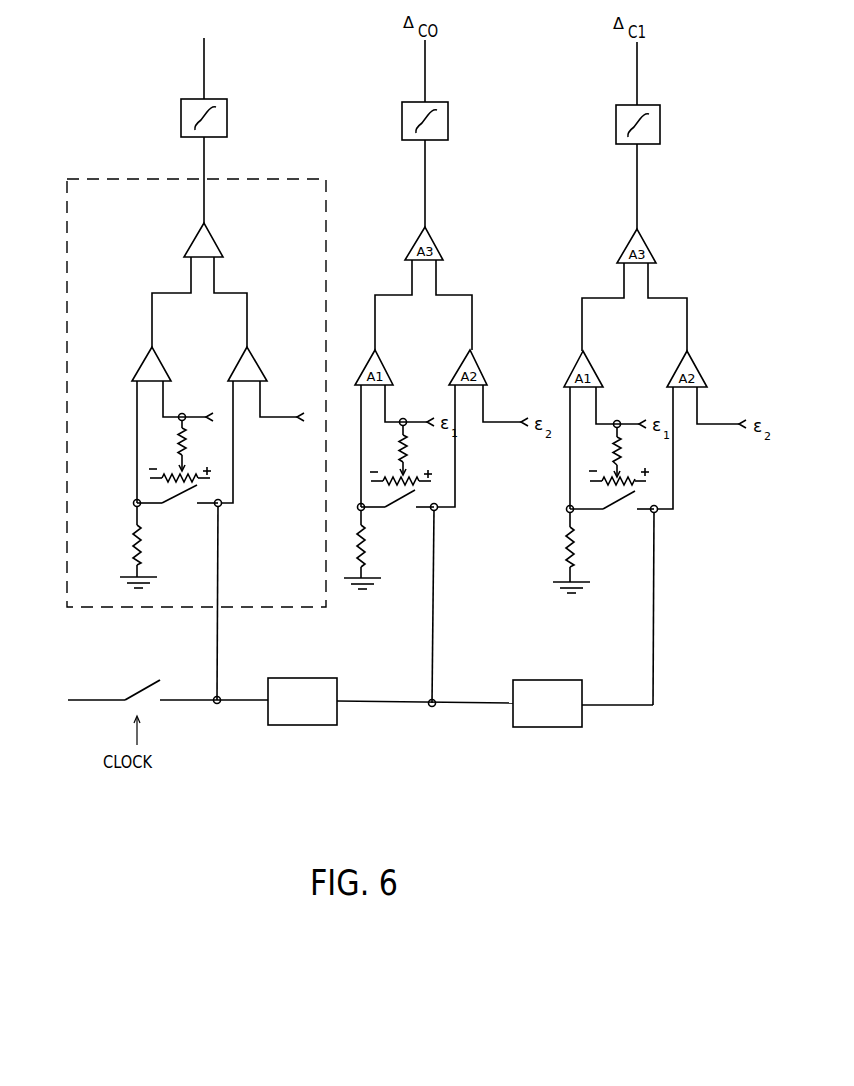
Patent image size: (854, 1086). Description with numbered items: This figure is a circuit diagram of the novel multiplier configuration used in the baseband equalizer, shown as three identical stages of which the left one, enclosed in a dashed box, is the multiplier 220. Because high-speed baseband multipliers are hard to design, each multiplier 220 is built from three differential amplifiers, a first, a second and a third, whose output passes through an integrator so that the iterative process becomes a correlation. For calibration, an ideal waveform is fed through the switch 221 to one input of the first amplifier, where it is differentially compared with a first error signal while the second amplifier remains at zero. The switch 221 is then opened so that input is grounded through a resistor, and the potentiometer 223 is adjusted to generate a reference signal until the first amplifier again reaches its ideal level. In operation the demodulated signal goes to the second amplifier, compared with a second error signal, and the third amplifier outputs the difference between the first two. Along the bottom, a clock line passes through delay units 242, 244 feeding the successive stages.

The multiplier 220 is at (76, 178).
The switch 221 is at (183, 507).
The potentiometer 223 is at (196, 470).
The delay unit 242 is at (300, 727).
The delay unit 244 is at (545, 728).